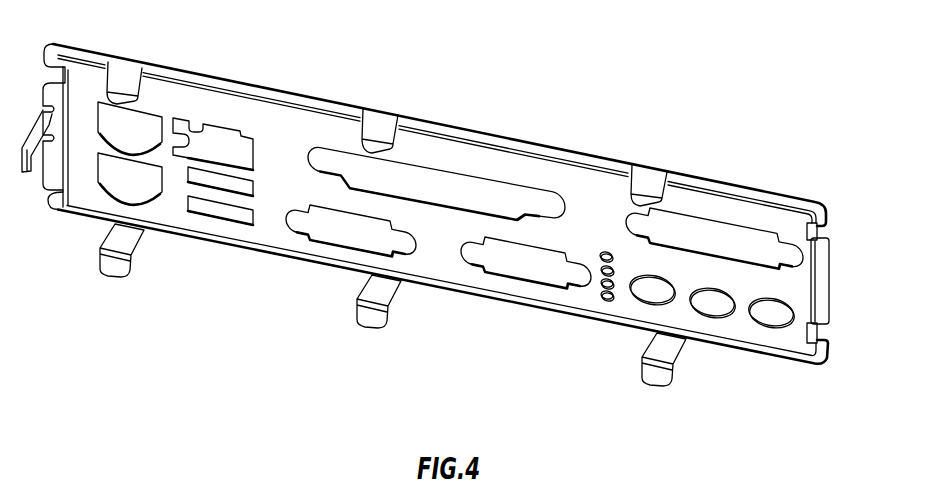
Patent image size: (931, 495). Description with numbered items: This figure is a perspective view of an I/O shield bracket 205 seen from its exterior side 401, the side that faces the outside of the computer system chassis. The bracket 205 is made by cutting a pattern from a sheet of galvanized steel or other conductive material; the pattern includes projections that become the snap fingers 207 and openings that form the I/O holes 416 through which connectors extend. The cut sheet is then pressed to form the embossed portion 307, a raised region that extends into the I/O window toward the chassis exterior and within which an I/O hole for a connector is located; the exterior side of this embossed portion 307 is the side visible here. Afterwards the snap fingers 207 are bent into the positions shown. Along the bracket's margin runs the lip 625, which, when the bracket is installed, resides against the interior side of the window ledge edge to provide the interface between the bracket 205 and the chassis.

The I/O shield bracket 205 is at (818, 207).
The snap fingers 207 is at (388, 125).
The lip 625 is at (743, 183).
The exterior side 401 is at (278, 240).
The embossed portion 307 is at (601, 249).
The I/O holes 416 is at (773, 327).